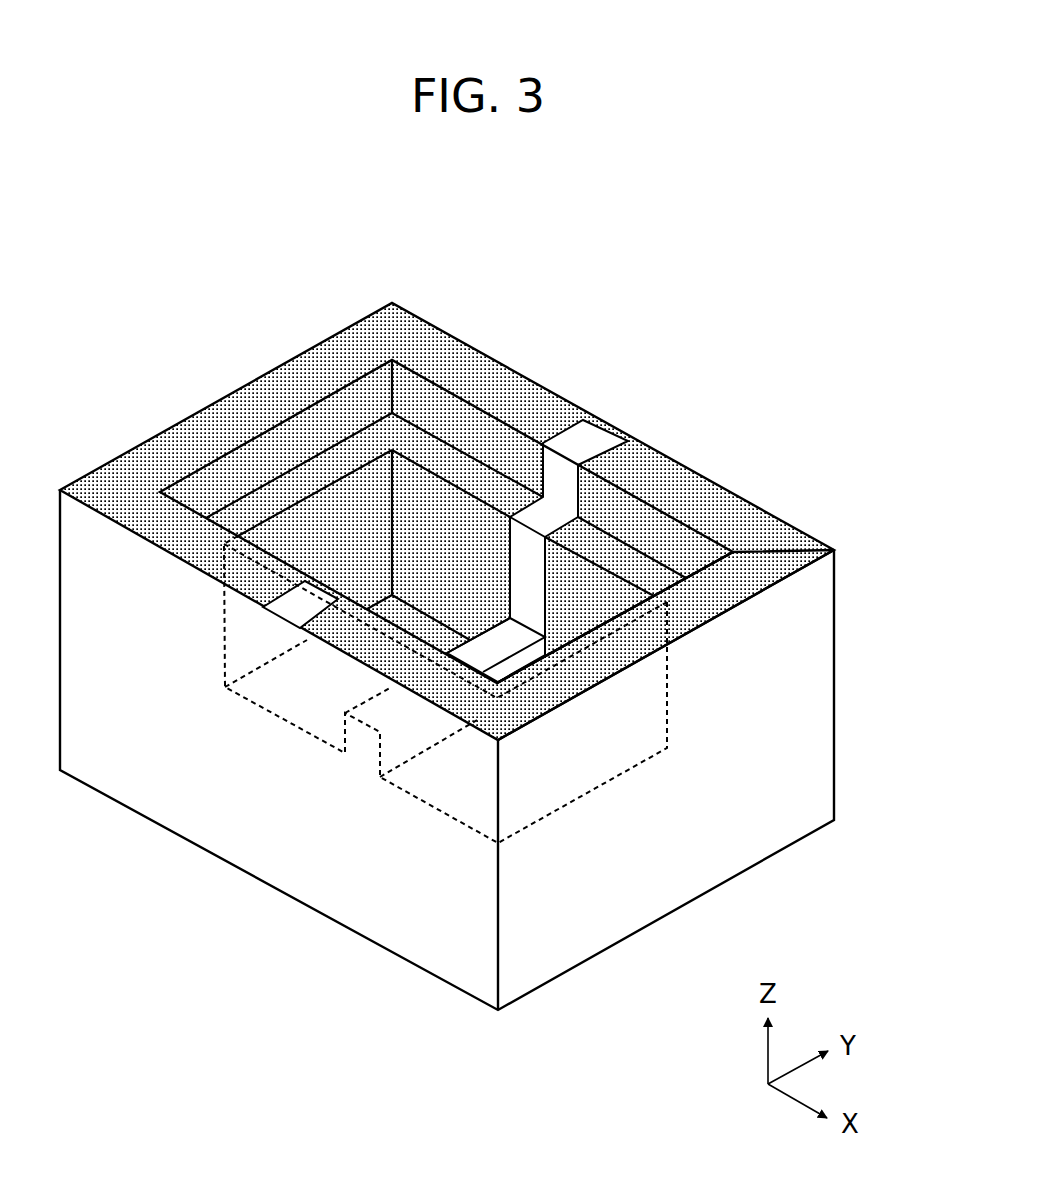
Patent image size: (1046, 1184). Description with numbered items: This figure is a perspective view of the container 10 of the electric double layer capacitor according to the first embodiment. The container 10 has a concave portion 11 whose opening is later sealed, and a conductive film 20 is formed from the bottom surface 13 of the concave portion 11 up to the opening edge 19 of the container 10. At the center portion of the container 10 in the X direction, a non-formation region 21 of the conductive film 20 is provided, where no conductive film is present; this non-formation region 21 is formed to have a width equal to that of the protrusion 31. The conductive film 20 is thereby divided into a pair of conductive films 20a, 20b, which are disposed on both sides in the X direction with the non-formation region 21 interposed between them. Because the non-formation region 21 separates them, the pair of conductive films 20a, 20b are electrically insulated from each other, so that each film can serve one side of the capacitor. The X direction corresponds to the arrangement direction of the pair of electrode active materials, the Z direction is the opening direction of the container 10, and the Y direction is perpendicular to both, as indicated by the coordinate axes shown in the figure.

The container 10 is at (495, 597).
The concave portion 11 is at (350, 512).
The bottom surface 13 is at (573, 775).
The opening edge 19 is at (705, 598).
The conductive film 20 is at (447, 521).
The conductive film 20a is at (206, 406).
The conductive film 20b is at (705, 610).
The non-formation region 21 is at (508, 633).
The protrusion 31 is at (490, 628).